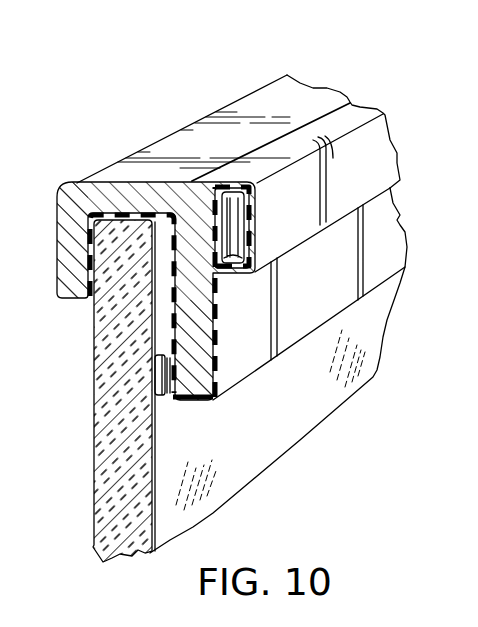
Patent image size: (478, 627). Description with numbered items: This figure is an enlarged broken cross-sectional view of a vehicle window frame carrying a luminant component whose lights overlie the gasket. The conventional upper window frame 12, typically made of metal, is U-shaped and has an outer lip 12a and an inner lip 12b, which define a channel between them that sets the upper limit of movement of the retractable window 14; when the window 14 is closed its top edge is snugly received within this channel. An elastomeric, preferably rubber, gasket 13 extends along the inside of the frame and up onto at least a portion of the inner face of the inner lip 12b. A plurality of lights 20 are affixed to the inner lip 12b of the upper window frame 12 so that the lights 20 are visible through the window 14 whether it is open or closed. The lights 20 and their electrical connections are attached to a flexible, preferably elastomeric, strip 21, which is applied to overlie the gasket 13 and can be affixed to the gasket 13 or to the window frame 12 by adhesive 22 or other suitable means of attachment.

The upper window frame 12 is at (300, 100).
The outer lip 12a is at (70, 237).
The inner lip 12b is at (200, 403).
The gasket 13 is at (135, 213).
The retractable window 14 is at (297, 413).
The lights 20 is at (155, 368).
The strip 21 is at (165, 372).
The adhesive 22 is at (172, 374).